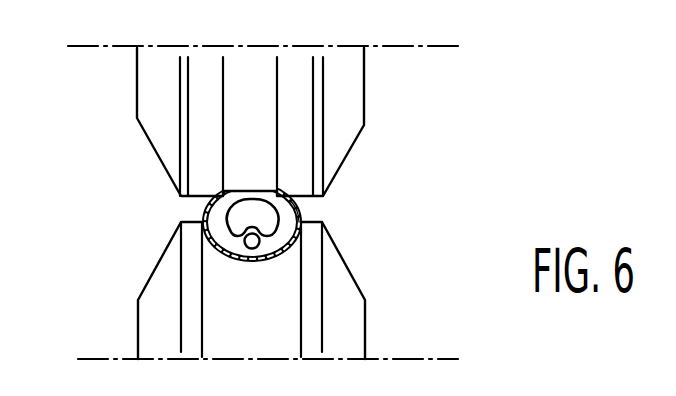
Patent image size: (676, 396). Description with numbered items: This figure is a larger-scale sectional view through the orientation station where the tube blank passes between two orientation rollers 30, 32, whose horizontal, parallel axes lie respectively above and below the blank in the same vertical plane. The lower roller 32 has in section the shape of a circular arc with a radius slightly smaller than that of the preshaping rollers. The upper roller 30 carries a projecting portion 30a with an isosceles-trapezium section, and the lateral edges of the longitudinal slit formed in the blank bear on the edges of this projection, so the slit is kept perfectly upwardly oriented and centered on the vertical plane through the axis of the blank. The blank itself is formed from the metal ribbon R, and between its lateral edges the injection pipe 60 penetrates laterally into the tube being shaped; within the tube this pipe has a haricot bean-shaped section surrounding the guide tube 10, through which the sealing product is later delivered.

The guide tube 10 is at (253, 249).
The upper orientation roller 30 is at (163, 110).
The projecting portion 30a is at (250, 163).
The lower orientation roller 32 is at (157, 315).
The injection pipe 60 is at (204, 214).
The metal ribbon R is at (303, 209).